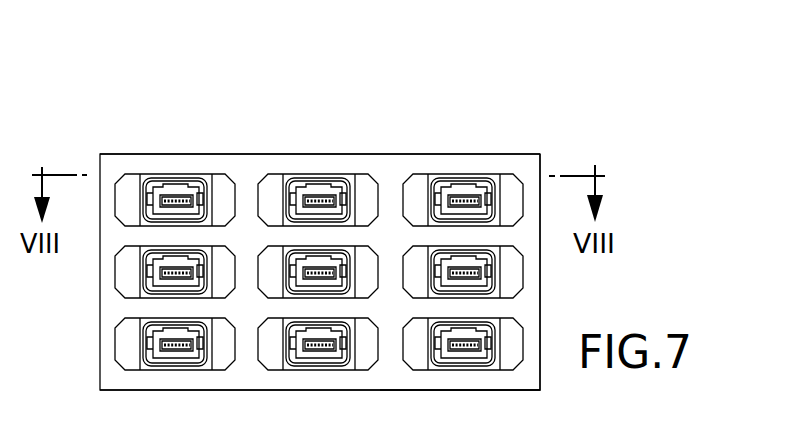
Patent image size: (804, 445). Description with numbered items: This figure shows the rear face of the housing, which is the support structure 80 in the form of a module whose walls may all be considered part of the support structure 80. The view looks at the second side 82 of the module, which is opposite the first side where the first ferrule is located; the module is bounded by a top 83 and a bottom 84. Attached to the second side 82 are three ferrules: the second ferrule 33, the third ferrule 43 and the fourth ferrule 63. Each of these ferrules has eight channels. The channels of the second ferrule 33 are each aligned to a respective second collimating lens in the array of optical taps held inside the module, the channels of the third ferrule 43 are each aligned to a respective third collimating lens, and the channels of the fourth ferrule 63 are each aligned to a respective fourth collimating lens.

The support structure 80 is at (549, 125).
The top 83 is at (377, 154).
The bottom 84 is at (260, 390).
The second side 82 is at (392, 373).
The third ferrule 43 is at (160, 174).
The second ferrule 33 is at (142, 276).
The fourth ferrule 63 is at (142, 351).